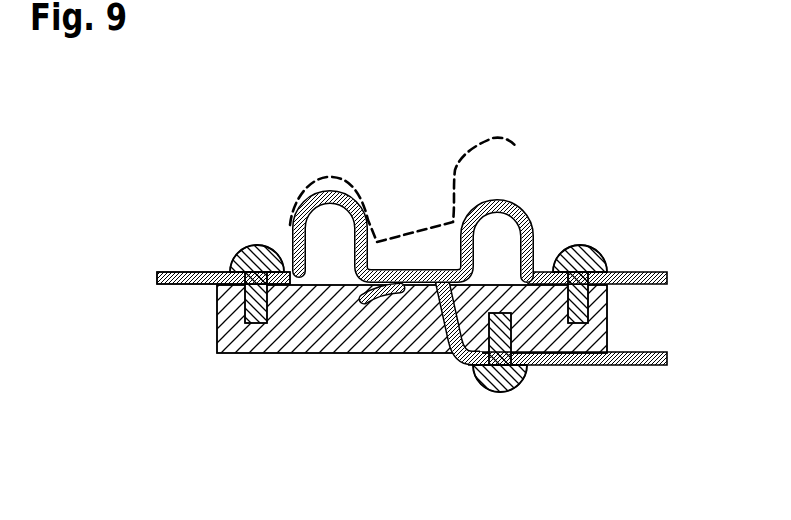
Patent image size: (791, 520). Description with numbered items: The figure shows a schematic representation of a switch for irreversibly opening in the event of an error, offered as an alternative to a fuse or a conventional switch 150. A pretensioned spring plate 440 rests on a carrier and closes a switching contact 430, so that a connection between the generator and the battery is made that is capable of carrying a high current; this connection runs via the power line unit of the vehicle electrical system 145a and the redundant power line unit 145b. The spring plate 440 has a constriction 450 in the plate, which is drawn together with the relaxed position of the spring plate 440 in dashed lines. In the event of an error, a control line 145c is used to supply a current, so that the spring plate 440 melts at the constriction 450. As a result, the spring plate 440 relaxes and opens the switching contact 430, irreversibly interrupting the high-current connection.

The switch 150 is at (178, 272).
The power line unit—vehicle electrical system 145a is at (178, 285).
The power line unit—redundancy 145b is at (643, 367).
The control line 145c is at (648, 271).
The constriction in plate 450 is at (533, 247).
The switching contact 430 is at (399, 281).
The spring plate 440 is at (360, 288).